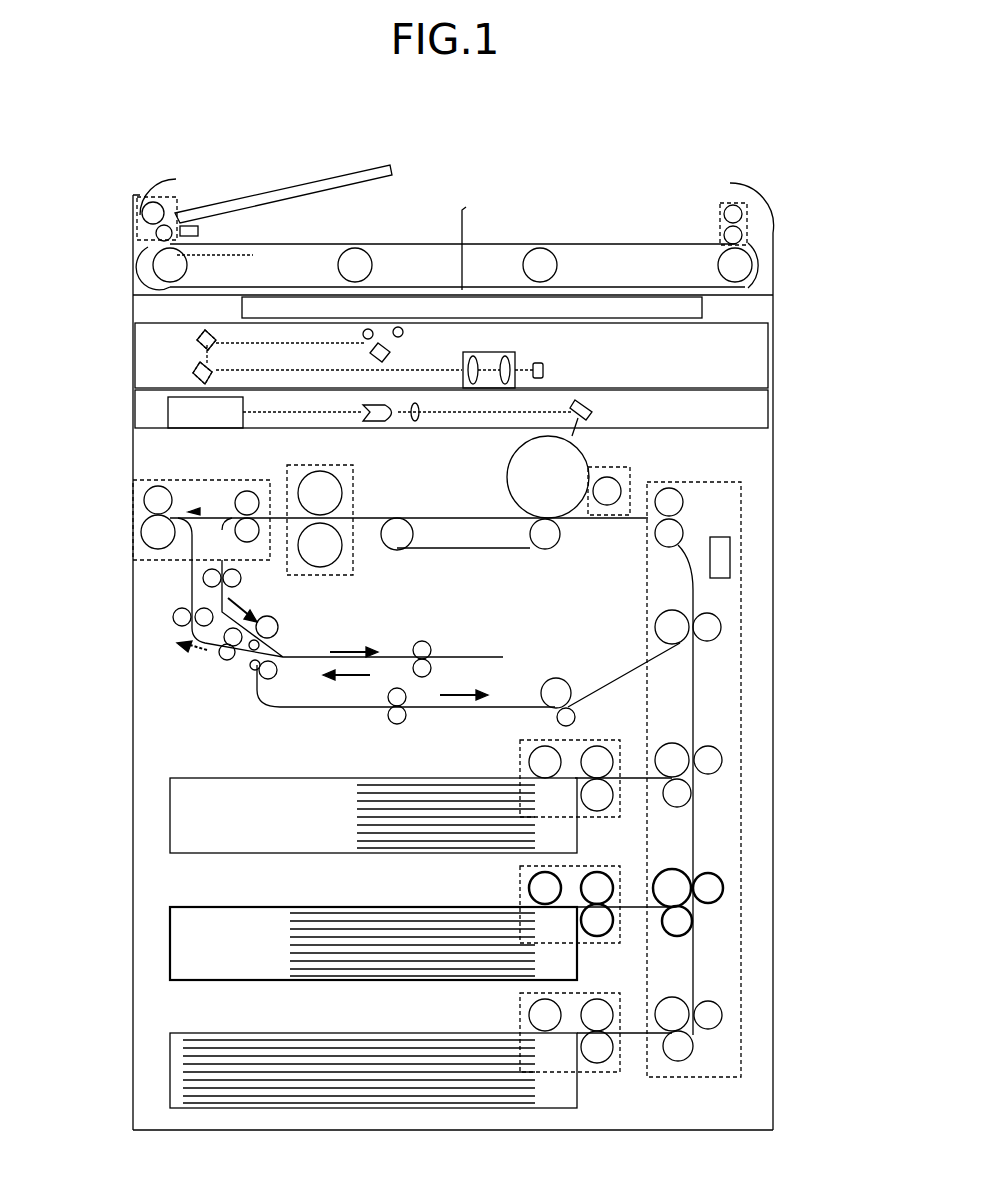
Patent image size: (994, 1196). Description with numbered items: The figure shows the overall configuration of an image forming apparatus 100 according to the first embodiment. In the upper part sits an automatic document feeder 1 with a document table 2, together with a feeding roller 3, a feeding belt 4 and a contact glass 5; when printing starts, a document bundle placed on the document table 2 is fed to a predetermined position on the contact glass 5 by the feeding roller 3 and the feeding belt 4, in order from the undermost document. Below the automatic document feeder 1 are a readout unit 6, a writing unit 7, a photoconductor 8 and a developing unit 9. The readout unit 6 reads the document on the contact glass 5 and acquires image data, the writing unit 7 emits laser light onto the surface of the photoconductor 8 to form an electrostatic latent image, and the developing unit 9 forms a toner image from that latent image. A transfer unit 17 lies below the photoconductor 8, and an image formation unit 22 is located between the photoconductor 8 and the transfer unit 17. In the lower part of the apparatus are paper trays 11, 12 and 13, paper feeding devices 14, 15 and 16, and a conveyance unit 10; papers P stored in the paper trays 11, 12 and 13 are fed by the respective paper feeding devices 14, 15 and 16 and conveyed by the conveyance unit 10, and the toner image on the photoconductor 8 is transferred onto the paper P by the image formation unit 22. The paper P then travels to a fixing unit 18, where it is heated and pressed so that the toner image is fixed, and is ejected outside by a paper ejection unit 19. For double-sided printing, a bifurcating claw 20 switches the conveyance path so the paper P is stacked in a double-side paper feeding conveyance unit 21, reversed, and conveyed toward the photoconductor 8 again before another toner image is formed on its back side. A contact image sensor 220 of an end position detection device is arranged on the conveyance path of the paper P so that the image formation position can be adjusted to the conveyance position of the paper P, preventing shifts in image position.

The image forming apparatus 100 is at (40, 152).
The automatic document feeder 1 is at (776, 253).
The document table 2 is at (320, 180).
The feeding roller 3 is at (176, 192).
The feeding belt 4 is at (466, 232).
The contact glass 5 is at (705, 312).
The readout unit 6 is at (748, 366).
The writing unit 7 is at (748, 413).
The photoconductor 8 is at (507, 477).
The developing unit 9 is at (620, 470).
The conveyance unit 10 is at (742, 660).
The paper tray 11 is at (170, 800).
The paper tray 12 is at (170, 923).
The paper tray 13 is at (170, 1052).
The paper feeding device 14 is at (518, 760).
The paper feeding device 15 is at (518, 888).
The paper feeding device 16 is at (518, 1013).
The transfer unit 17 is at (558, 545).
The fixing unit 18 is at (355, 470).
The paper ejection unit 19 is at (150, 480).
The bifurcating claw 20 is at (200, 510).
The double-side paper feeding conveyance unit 21 is at (324, 712).
The image formation unit 22 is at (560, 519).
The contact image sensor 220 is at (730, 557).
The paper P is at (400, 786).